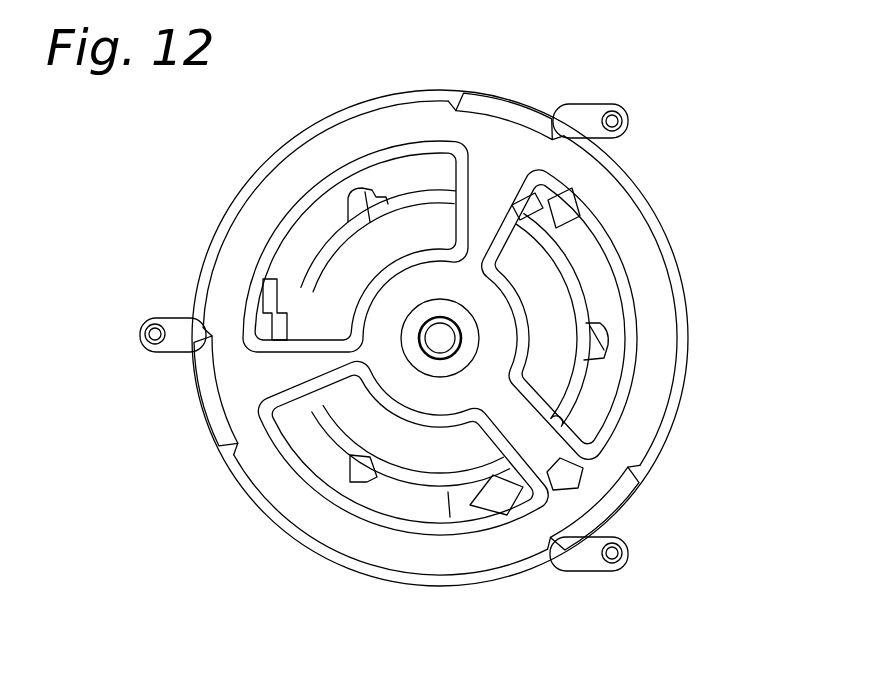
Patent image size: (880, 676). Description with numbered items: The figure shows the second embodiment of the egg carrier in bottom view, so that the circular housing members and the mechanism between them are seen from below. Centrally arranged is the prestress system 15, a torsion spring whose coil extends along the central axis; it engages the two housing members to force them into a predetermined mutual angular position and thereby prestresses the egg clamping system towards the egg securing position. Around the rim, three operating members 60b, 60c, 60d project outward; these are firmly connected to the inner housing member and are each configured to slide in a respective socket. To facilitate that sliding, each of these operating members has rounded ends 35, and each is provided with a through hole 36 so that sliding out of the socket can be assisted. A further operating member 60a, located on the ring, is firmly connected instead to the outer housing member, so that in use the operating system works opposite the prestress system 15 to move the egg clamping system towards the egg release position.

The prestress system 15 is at (367, 197).
The rounded ends 35 is at (627, 122).
The through hole 36 is at (613, 112).
The operating member 60a is at (574, 481).
The operating member 60b is at (579, 577).
The operating member 60c is at (578, 98).
The operating member 60d is at (160, 317).